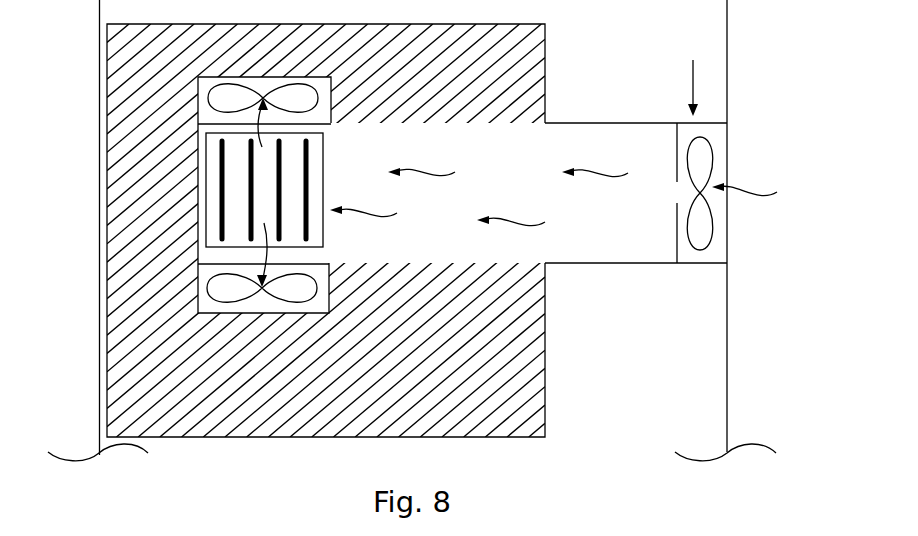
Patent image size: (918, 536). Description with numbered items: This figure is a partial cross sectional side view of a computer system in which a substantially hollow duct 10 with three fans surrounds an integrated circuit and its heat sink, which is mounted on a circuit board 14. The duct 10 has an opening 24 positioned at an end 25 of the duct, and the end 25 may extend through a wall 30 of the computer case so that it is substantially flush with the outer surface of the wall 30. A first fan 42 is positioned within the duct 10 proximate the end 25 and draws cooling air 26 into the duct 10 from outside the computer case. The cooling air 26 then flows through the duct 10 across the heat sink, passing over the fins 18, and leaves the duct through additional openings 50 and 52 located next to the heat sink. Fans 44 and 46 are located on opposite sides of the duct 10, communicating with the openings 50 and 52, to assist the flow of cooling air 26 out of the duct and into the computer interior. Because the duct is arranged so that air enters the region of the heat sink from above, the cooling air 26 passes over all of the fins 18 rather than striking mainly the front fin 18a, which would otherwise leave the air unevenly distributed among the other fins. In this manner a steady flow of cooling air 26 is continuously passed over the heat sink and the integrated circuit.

The duct 10 is at (608, 123).
The circuit board 14 is at (524, 52).
The fins 18 is at (209, 190).
The front fin 18a is at (307, 155).
The opening 24 is at (677, 192).
The end of the duct 25 is at (692, 73).
The cooling air 26 is at (553, 197).
The wall 30 is at (727, 337).
The first fan 42 is at (702, 157).
The fan 44 is at (230, 98).
The fan 46 is at (232, 288).
The opening 50 is at (270, 125).
The opening 52 is at (264, 283).